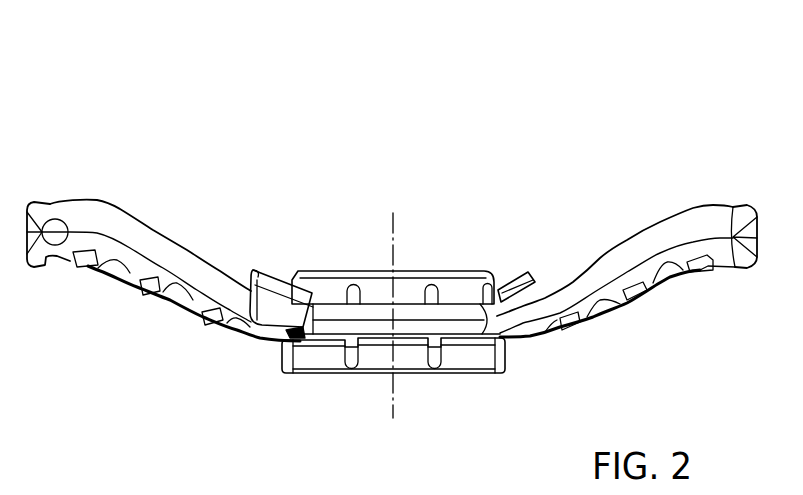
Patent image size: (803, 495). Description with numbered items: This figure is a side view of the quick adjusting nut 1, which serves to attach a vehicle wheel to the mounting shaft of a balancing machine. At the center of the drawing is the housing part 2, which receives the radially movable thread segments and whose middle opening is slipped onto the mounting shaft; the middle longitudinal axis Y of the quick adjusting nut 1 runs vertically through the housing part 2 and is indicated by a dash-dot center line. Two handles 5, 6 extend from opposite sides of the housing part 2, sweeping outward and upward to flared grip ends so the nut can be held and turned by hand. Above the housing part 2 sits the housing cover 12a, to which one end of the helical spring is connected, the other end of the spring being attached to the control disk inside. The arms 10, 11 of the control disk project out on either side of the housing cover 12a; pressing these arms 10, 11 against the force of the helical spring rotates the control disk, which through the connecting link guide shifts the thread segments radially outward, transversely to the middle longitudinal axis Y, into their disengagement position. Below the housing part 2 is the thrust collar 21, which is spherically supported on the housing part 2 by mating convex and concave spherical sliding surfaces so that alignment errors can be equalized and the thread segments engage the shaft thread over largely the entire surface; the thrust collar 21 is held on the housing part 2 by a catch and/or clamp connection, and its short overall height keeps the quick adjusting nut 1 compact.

The quick adjusting nut 1 is at (213, 106).
The housing part 2 is at (472, 302).
The handle 5 is at (125, 223).
The handle 6 is at (662, 226).
The arm 10 is at (275, 278).
The arm 11 is at (507, 285).
The housing cover 12a is at (374, 297).
The thrust collar 21 is at (318, 357).
The middle longitudinal axis Y is at (396, 228).